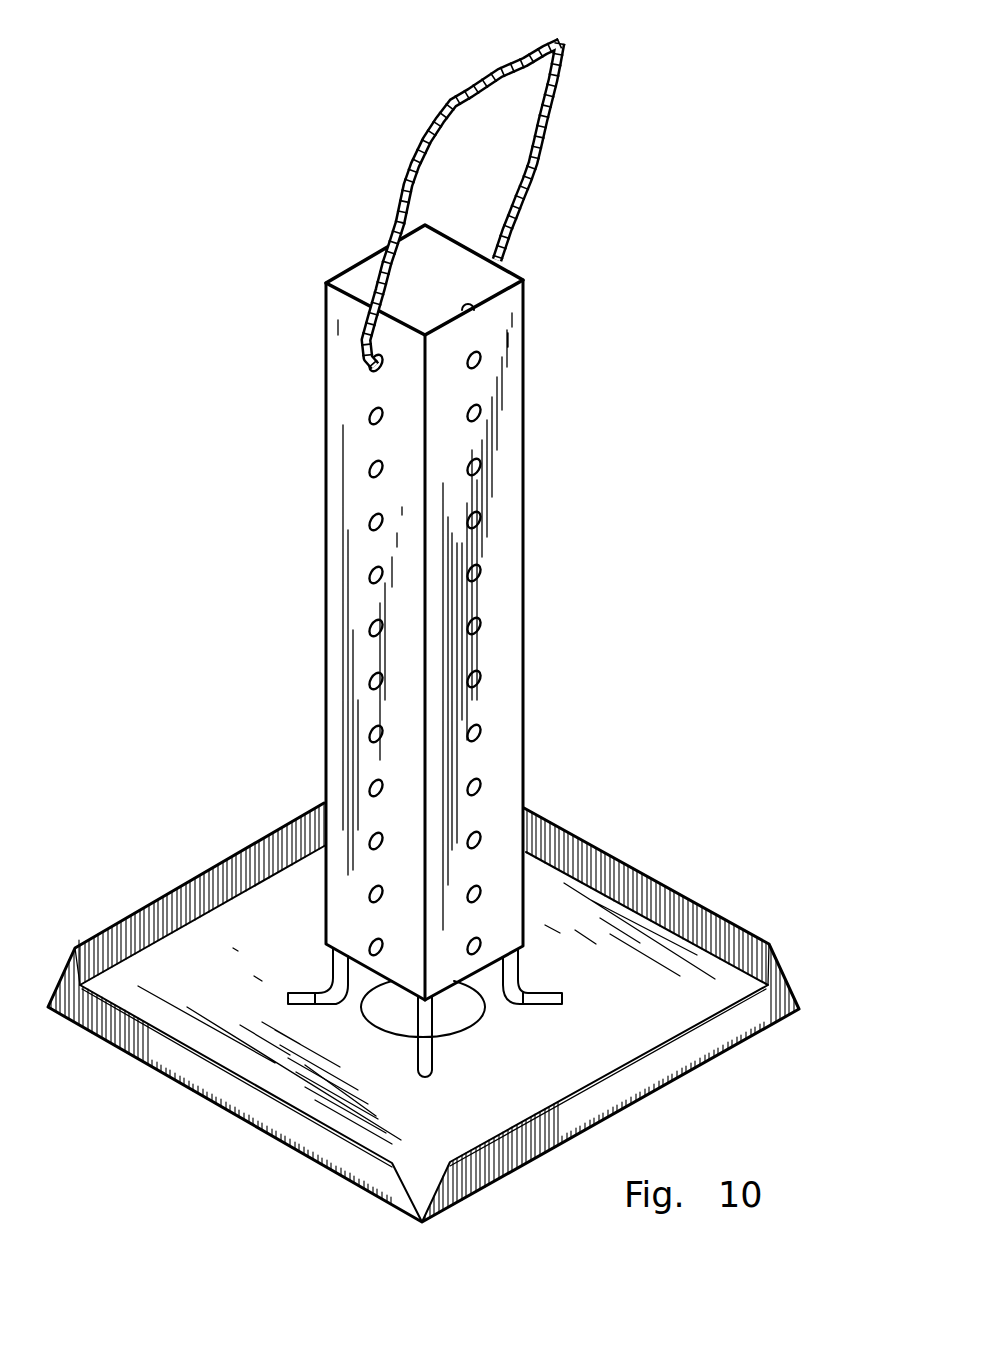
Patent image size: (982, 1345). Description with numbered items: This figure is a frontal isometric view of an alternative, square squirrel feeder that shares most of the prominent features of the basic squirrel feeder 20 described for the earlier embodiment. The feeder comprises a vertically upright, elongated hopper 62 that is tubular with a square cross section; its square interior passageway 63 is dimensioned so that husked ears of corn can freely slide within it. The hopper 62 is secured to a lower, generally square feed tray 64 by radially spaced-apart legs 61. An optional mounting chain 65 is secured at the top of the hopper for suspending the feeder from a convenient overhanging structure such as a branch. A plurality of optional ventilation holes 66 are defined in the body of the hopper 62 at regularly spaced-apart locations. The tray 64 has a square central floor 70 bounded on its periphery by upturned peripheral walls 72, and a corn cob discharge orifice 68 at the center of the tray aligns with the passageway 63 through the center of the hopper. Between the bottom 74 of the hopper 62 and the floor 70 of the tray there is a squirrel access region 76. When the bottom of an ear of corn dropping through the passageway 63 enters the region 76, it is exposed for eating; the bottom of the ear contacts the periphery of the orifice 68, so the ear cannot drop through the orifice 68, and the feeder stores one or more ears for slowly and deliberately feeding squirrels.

The squirrel feeder 20 is at (246, 670).
The legs 61 is at (317, 993).
The hopper 62 is at (546, 513).
The interior passageway 63 is at (364, 284).
The feed tray 64 is at (668, 985).
The mounting chain 65 is at (555, 107).
The ventilation holes 66 is at (481, 578).
The corn cob discharge orifice 68 is at (458, 1013).
The central floor 70 is at (426, 1011).
The peripheral walls 72 is at (627, 887).
The bottom of hopper 74 is at (521, 990).
The squirrel access region 76 is at (370, 973).